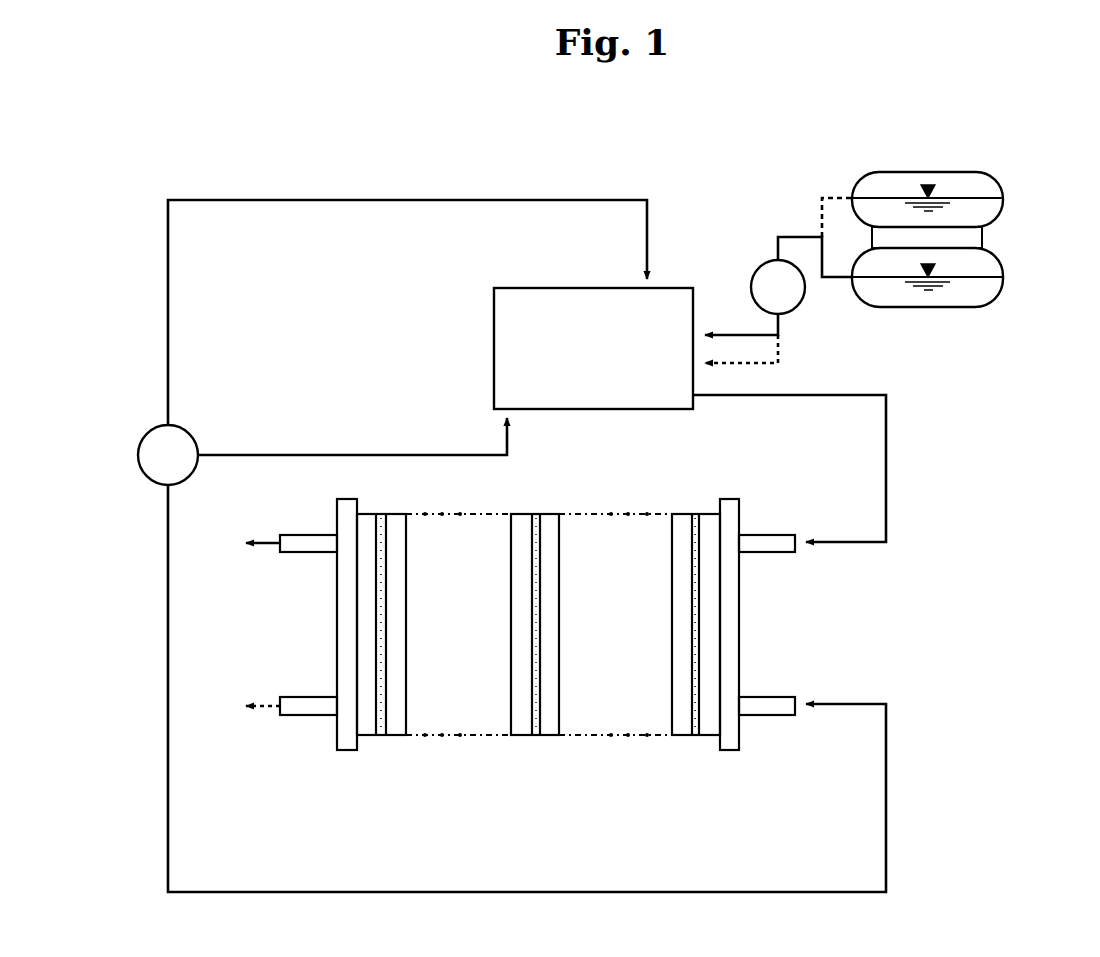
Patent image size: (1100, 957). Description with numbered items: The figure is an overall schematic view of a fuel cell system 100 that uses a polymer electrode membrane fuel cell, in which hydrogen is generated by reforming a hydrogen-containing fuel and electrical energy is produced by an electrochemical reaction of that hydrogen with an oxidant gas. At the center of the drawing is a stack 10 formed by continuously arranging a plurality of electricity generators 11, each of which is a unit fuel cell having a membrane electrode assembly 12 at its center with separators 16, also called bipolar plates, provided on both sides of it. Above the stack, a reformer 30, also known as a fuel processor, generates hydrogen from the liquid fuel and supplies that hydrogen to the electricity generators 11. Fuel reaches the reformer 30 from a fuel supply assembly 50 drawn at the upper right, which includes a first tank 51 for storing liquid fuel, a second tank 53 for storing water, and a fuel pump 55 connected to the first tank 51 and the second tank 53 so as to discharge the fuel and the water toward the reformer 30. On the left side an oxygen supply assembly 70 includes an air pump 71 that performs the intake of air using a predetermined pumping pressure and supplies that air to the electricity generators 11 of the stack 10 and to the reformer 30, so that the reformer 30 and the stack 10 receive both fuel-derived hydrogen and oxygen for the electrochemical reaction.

The fuel cell system 100 is at (584, 122).
The stack 10 is at (569, 686).
The electricity generator 11 is at (521, 694).
The membrane electrode assembly 12 is at (537, 737).
The separator 16 is at (521, 737).
The reformer 30 is at (477, 289).
The fuel supply assembly 50 is at (972, 244).
The first tank 51 is at (906, 172).
The second tank 53 is at (906, 307).
The fuel pump 55 is at (765, 263).
The oxygen supply assembly 70 is at (209, 437).
The air pump 71 is at (182, 427).